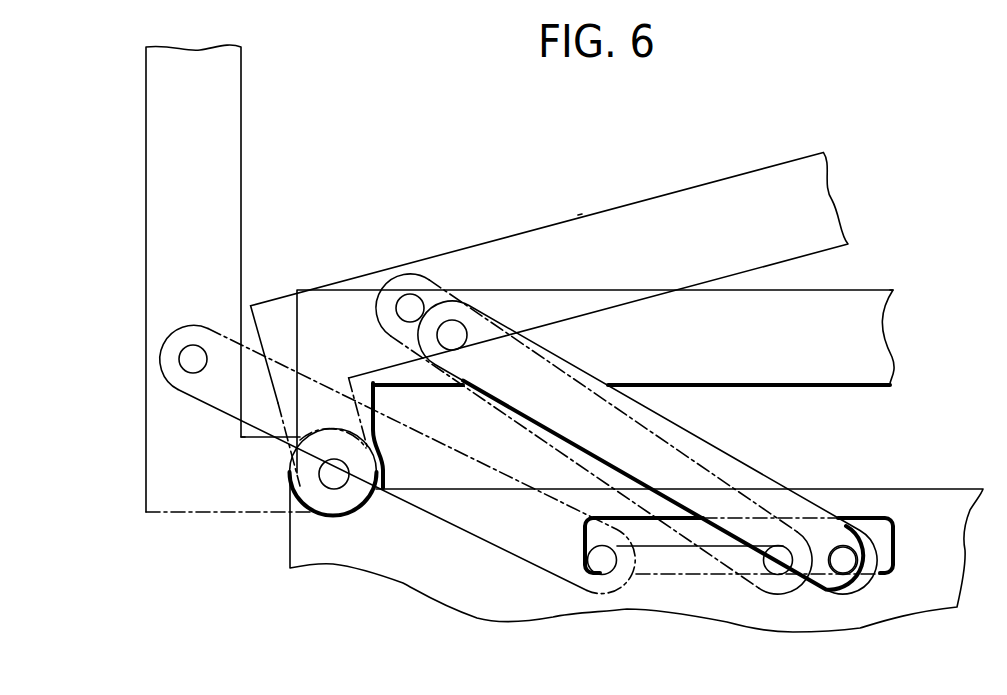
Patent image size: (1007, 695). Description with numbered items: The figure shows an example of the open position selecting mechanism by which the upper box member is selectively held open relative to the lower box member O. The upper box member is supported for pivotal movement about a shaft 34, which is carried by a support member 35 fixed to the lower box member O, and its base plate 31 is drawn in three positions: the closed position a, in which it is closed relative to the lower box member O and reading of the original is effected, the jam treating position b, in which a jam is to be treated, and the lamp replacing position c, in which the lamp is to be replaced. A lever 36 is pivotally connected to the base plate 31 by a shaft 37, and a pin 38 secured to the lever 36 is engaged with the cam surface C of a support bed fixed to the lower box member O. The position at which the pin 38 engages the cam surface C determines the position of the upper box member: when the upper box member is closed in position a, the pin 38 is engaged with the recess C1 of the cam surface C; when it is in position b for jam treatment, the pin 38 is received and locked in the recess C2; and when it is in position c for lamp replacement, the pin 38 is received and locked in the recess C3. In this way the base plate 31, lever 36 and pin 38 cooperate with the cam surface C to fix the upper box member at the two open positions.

The base plate 31 is at (235, 148).
The shaft 34 is at (334, 486).
The support member 35 is at (358, 547).
The lever 36 is at (724, 494).
The shaft 37 is at (458, 332).
The pin 38 is at (847, 562).
The lower box member O is at (907, 484).
The cam surface C is at (712, 542).
The recess C1 is at (887, 574).
The recess C2 is at (773, 573).
The recess C3 is at (631, 562).
The position a is at (892, 290).
The position b is at (578, 215).
The position c is at (241, 96).